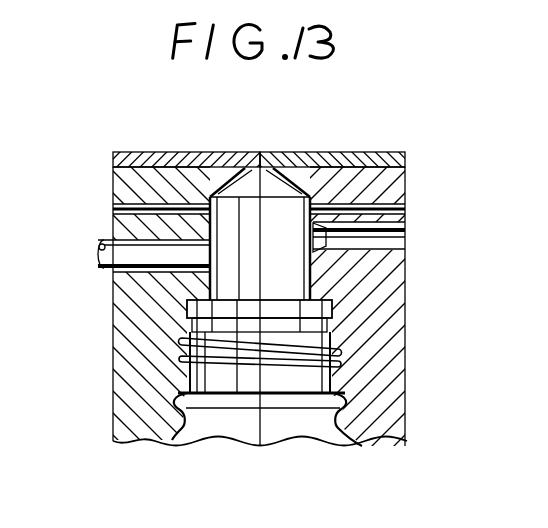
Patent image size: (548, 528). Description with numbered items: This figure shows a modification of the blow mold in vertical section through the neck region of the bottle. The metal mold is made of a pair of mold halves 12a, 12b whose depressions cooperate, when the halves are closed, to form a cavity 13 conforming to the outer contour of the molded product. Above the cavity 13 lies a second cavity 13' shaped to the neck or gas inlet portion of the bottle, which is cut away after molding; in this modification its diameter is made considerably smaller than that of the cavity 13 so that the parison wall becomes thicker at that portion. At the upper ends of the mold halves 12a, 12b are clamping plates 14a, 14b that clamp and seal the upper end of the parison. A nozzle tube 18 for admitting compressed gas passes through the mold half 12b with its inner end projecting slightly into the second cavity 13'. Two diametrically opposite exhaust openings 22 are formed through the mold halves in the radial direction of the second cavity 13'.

The mold half 12a is at (378, 345).
The mold half 12b is at (133, 370).
The cavity 13 is at (267, 398).
The second cavity 13' is at (271, 152).
The clamping plate 14a is at (363, 158).
The clamping plate 14b is at (195, 158).
The nozzle tube 18 is at (150, 249).
The exhaust openings 22 is at (133, 203).